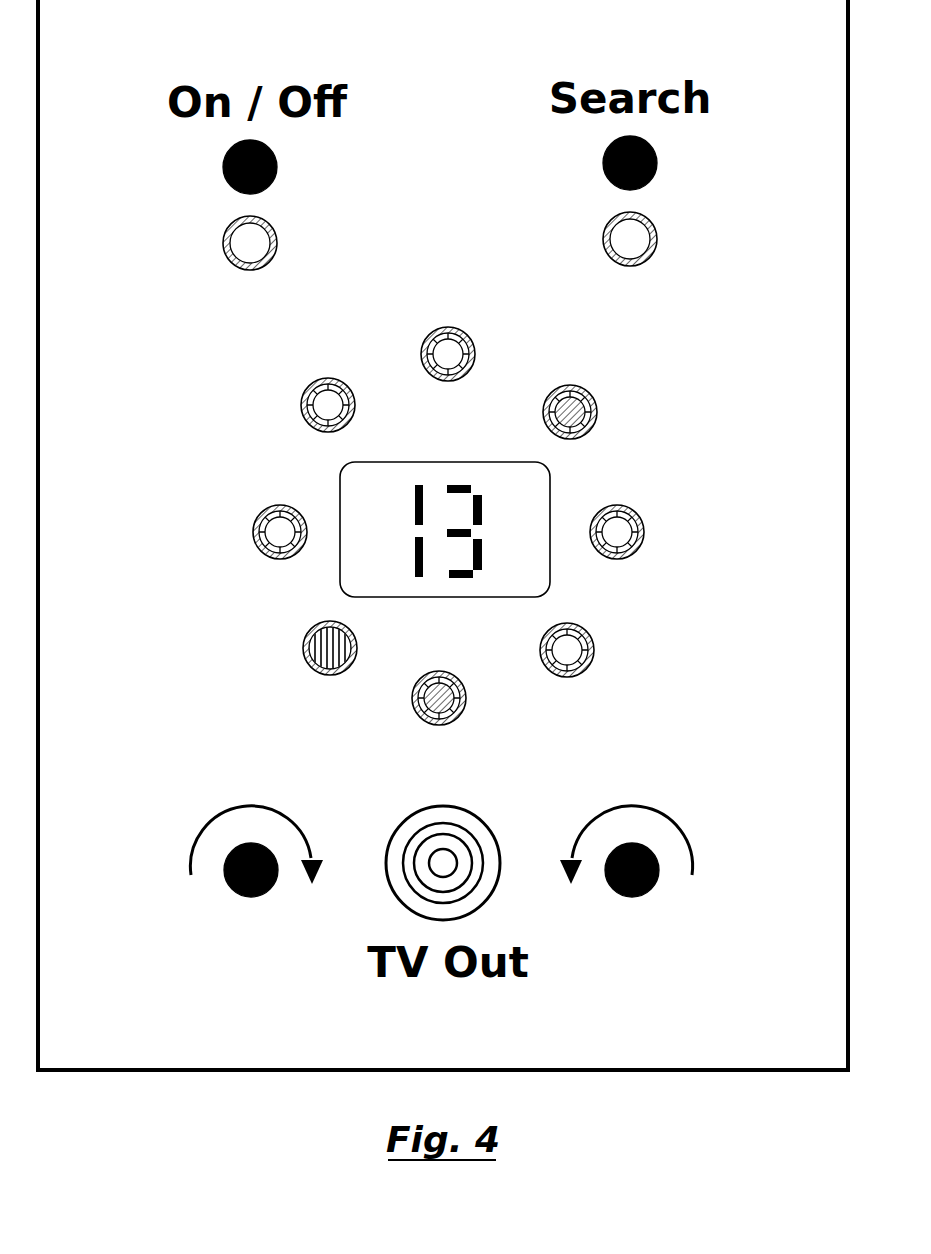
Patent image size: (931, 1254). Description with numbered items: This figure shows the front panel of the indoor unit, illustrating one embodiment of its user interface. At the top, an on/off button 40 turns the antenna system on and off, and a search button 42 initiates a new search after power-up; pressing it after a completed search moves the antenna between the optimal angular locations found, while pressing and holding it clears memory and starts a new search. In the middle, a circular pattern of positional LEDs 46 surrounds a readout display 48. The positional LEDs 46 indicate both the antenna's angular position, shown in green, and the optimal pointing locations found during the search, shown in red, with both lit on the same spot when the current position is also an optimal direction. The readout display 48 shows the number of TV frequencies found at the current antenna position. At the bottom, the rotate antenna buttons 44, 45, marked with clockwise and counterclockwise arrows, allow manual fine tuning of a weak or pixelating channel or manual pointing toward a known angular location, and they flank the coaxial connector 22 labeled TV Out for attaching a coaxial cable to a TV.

The coaxial connector 22 is at (458, 852).
The on/off button 40 is at (222, 164).
The search button 42 is at (658, 168).
The rotate antenna button 44 is at (251, 898).
The rotate antenna button 45 is at (627, 900).
The positional LEDs 46 is at (597, 408).
The readout display 48 is at (430, 460).